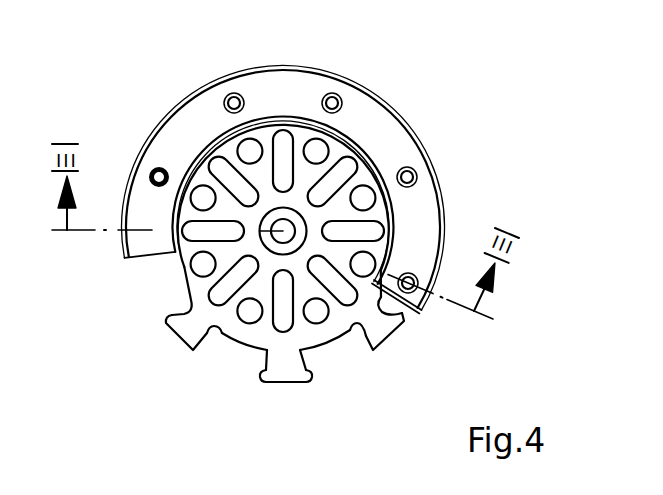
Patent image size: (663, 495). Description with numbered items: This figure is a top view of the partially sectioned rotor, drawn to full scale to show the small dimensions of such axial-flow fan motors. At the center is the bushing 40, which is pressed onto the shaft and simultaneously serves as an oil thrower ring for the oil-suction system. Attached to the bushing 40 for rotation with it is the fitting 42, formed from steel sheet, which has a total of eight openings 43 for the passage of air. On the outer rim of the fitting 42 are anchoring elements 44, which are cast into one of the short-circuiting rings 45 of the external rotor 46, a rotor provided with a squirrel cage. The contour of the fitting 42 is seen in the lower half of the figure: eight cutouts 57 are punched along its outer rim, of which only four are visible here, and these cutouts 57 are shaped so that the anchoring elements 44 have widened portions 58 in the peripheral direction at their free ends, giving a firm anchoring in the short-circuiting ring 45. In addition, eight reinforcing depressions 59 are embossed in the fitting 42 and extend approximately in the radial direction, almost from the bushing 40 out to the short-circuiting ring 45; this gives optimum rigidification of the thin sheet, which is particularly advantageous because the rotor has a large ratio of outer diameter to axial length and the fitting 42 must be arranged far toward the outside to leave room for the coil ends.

The bushing 40 is at (312, 242).
The fitting 42 is at (261, 334).
The openings 43 is at (252, 147).
The anchoring elements 44 is at (188, 330).
The short-circuiting ring 45 is at (398, 158).
The external rotor 46 is at (168, 100).
The cutouts 57 is at (170, 273).
The widened portions 58 is at (265, 377).
The reinforcing depressions 59 is at (304, 198).